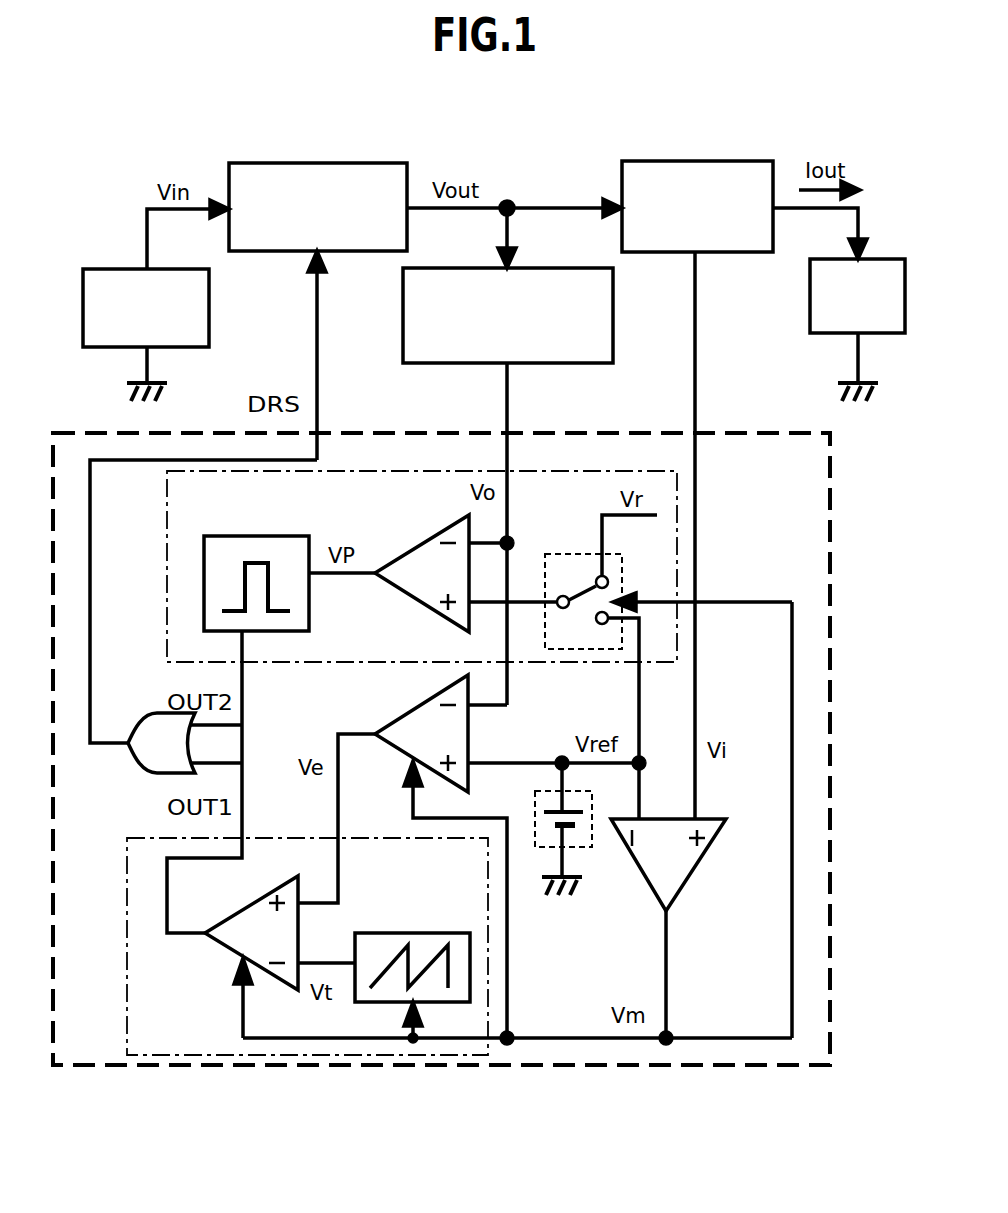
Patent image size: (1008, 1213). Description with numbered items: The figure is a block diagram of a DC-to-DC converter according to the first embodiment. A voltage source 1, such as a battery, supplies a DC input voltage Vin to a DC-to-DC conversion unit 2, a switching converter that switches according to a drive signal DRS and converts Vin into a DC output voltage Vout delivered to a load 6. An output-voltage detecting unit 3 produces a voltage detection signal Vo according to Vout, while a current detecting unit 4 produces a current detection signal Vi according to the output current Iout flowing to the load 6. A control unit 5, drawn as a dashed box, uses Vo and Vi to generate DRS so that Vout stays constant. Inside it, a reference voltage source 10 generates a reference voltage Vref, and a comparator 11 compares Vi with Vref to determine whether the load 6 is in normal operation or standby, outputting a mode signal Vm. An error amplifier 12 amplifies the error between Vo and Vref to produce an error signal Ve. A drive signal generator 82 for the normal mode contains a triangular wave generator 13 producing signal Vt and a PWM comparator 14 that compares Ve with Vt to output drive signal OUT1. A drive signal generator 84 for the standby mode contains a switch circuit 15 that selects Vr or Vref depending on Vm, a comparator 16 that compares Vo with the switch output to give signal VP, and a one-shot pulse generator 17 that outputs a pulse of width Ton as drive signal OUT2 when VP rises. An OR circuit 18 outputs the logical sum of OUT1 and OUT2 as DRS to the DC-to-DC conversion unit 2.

The voltage source 1 is at (209, 308).
The DC-to-DC conversion unit 2 is at (328, 163).
The output-voltage detecting unit 3 is at (403, 320).
The current detecting unit 4 is at (705, 161).
The control unit 5 is at (830, 557).
The load 6 is at (810, 297).
The reference voltage source 10 is at (545, 791).
The comparator 11 is at (693, 876).
The error amplifier 12 is at (402, 723).
The triangular wave generator 13 is at (413, 933).
The PWM comparator 14 is at (225, 921).
The switch circuit 15 is at (559, 554).
The comparator 16 is at (414, 548).
The one-shot pulse generator 17 is at (257, 536).
The OR circuit 18 is at (130, 768).
The drive signal generator 82 is at (127, 945).
The drive signal generator 84 is at (167, 560).